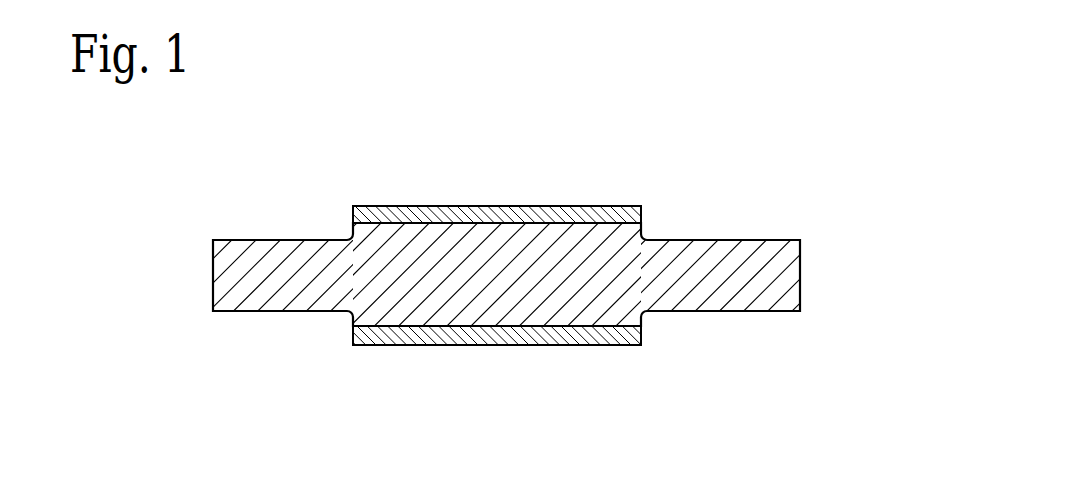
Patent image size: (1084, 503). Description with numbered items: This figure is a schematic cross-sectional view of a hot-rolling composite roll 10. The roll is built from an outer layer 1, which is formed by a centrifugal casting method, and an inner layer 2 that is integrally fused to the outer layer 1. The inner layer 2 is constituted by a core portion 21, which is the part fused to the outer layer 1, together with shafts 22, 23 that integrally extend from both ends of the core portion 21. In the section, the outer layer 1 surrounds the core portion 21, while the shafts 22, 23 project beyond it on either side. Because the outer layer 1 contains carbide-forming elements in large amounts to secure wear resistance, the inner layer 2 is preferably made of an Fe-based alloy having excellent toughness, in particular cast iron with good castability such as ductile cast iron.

The hot-rolling composite roll 10 is at (610, 172).
The outer layer 1 is at (441, 208).
The inner layer 2 is at (304, 312).
The core portion 21 is at (513, 245).
The shaft 22 is at (268, 250).
The shaft 23 is at (722, 250).